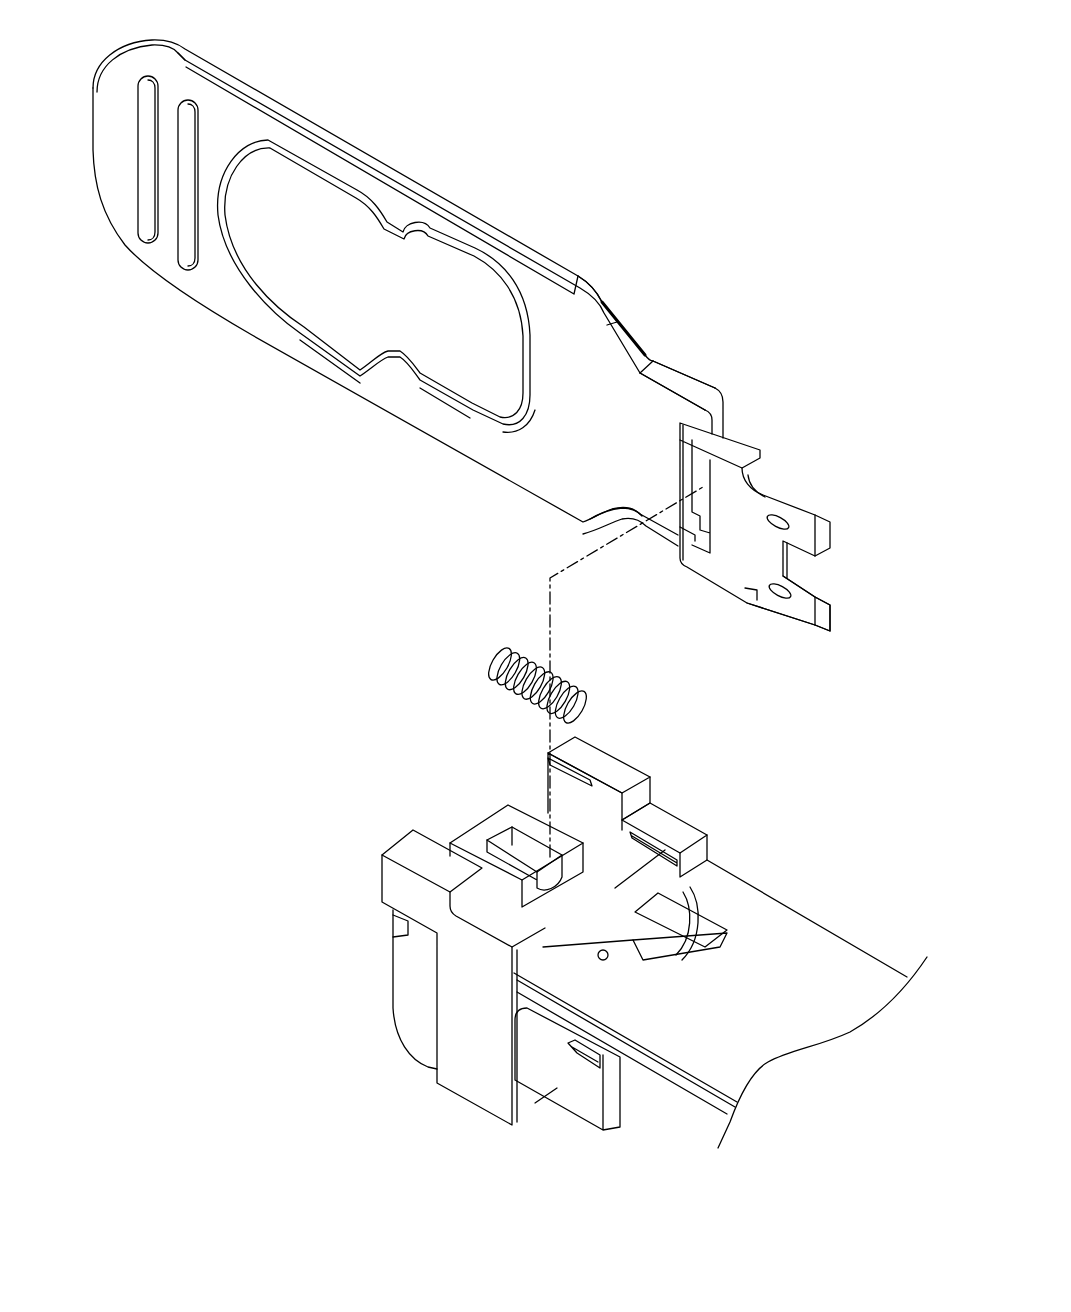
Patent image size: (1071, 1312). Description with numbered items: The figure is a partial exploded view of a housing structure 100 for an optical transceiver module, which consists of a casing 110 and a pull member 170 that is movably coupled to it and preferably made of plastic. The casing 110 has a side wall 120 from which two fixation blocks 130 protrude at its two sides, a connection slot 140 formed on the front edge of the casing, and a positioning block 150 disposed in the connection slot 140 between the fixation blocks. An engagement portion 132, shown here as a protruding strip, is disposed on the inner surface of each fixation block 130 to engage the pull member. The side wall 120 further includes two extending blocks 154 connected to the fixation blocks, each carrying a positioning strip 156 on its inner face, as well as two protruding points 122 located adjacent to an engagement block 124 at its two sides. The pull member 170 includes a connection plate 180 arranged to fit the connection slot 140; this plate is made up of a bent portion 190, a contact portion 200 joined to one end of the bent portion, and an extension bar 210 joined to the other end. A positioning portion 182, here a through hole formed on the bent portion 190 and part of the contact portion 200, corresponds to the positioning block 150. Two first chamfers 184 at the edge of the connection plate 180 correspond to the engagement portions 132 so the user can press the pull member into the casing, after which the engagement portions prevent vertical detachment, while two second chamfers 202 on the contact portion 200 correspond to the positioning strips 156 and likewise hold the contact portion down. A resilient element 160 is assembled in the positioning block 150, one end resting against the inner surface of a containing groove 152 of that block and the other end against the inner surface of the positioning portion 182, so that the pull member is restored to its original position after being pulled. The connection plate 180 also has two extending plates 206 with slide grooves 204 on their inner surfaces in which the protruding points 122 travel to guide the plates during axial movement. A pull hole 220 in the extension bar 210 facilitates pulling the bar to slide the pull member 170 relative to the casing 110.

The housing structure 100 is at (488, 29).
The casing 110 is at (684, 1102).
The side wall 120 is at (812, 952).
The protruding points 122 is at (687, 910).
The engagement block 124 is at (690, 930).
The fixation blocks 130 is at (610, 768).
The engagement portion 132 is at (585, 768).
The connection slot 140 is at (708, 847).
The positioning block 150 is at (487, 827).
The containing groove 152 is at (520, 847).
The extending blocks 154 is at (679, 837).
The positioning strip 156 is at (650, 840).
The resilient element 160 is at (521, 650).
The pull member 170 is at (388, 163).
The connection plate 180 is at (812, 358).
The positioning portion 182 is at (703, 487).
The first chamfers 184 is at (675, 382).
The bent portion 190 is at (712, 390).
The contact portion 200 is at (743, 513).
The second chamfers 202 is at (730, 443).
The slide grooves 204 is at (780, 596).
The extending plates 206 is at (800, 608).
The extension bar 210 is at (573, 340).
The pull hole 220 is at (358, 324).